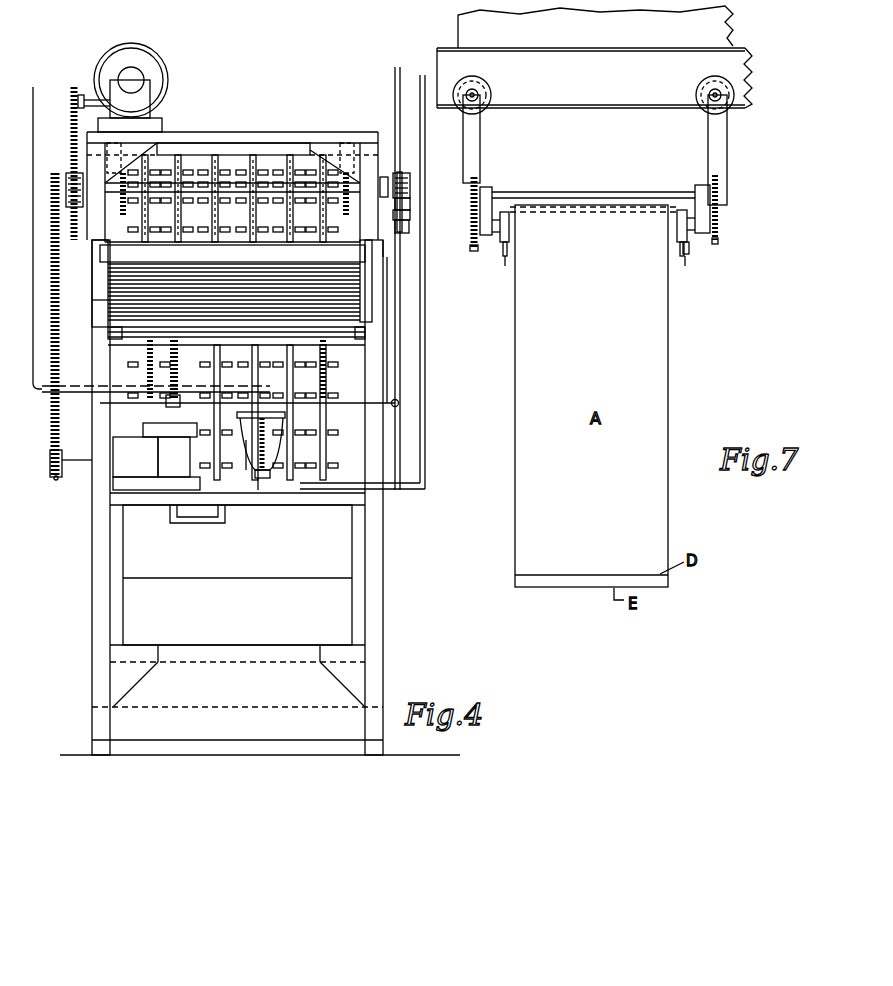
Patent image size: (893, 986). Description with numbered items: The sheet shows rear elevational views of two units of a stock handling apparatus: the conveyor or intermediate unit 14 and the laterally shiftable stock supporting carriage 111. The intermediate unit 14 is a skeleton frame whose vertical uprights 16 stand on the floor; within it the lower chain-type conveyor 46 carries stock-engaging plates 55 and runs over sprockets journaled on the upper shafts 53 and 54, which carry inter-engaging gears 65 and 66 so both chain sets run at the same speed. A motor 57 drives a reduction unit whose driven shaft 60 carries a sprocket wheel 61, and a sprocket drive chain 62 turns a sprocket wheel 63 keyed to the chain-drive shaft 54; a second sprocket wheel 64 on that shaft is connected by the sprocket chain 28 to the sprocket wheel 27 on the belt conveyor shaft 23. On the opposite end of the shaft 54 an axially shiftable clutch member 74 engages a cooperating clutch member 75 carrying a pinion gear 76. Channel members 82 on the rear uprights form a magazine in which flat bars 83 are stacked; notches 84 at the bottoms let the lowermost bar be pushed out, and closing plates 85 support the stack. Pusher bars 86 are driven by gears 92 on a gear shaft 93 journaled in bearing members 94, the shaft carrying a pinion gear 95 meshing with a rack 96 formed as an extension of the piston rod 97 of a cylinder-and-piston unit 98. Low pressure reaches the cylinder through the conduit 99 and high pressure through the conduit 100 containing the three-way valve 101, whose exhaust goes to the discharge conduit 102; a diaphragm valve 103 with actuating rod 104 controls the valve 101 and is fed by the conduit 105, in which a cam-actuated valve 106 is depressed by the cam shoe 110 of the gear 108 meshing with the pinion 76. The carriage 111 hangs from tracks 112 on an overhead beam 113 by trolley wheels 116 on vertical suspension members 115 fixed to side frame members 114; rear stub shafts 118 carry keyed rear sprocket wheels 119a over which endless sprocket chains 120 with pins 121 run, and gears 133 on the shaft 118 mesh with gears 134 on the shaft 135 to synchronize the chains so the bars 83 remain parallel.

In FIG. 4, the intermediate unit 14 is at (237, 604).
In FIG. 4, the vertical uprights 16 is at (92, 548).
In FIG. 4, the belt conveyor unit shaft 23 is at (70, 459).
In FIG. 4, the sprocket wheel 27 is at (56, 480).
In FIG. 4, the sprocket chain 28 is at (92, 300).
In FIG. 4, the lower chain-type conveyor 46 is at (218, 366).
In FIG. 4, the upper sprocket shaft 53 is at (228, 172).
In FIG. 4, the chain-drive shaft 54 is at (196, 190).
In FIG. 4, the stock-engaging plates 55 is at (244, 166).
In FIG. 4, the motor 57 is at (152, 66).
In FIG. 4, the driven shaft 60 is at (92, 99).
In FIG. 4, the sprocket wheel 61 is at (77, 100).
In FIG. 4, the sprocket drive chain 62 is at (70, 133).
In FIG. 4, the sprocket wheel 63 is at (76, 208).
In FIG. 4, the second sprocket wheel 64 is at (55, 176).
In FIG. 4, the inter-engaging gear 65 is at (118, 150).
In FIG. 4, the inter-engaging gear 66 is at (123, 216).
In FIG. 4, the axially shiftable clutch member 74 is at (384, 177).
In FIG. 4, the cooperating clutch member 75 is at (400, 172).
In FIG. 4, the pinion gear 76 is at (410, 188).
In FIG. 4, the channel member 82 is at (100, 250).
In FIG. 4, the flat bars 83 is at (340, 282).
In FIG. 7, the flat bars 83 is at (672, 200).
In FIG. 4, the notch 84 is at (108, 330).
In FIG. 4, the closing plate 85 is at (112, 338).
In FIG. 4, the pusher bar 86 is at (147, 360).
In FIG. 4, the gear 92 is at (140, 390).
In FIG. 4, the gear shaft 93 is at (232, 337).
In FIG. 4, the bearing member 94 is at (123, 340).
In FIG. 4, the pinion gear 95 is at (178, 362).
In FIG. 4, the rack 96 is at (166, 404).
In FIG. 4, the piston rod 97 is at (156, 456).
In FIG. 4, the cylinder-and-piston unit 98 is at (174, 457).
In FIG. 4, the conduit 99 is at (44, 394).
In FIG. 4, the conduit 100 is at (426, 431).
In FIG. 4, the 3-way valve 101 is at (259, 482).
In FIG. 4, the discharge conduit 102 is at (262, 480).
In FIG. 4, the diaphragm valve 103 is at (247, 472).
In FIG. 4, the valve actuating rod 104 is at (266, 440).
In FIG. 4, the conduit 105 is at (395, 69).
In FIG. 4, the cam-actuated valve 106 is at (409, 228).
In FIG. 4, the gear 108 is at (410, 214).
In FIG. 4, the cam shoe 110 is at (410, 203).
In FIG. 7, the carriage 111 is at (590, 197).
In FIG. 7, the tracks 112 is at (568, 94).
In FIG. 7, the overhead beam 113 is at (595, 27).
In FIG. 7, the side frame member 114 is at (488, 206).
In FIG. 7, the vertical suspension member 115 is at (470, 146).
In FIG. 7, the trolley wheel 116 is at (488, 92).
In FIG. 7, the rear stub shaft 118 is at (510, 232).
In FIG. 7, the rear sprocket wheel 119a is at (507, 246).
In FIG. 7, the endless sprocket chain 120 is at (690, 247).
In FIG. 7, the pins 121 is at (505, 268).
In FIG. 7, the gear 133 is at (475, 250).
In FIG. 7, the gear 134 is at (472, 185).
In FIG. 7, the shaft 135 is at (628, 192).